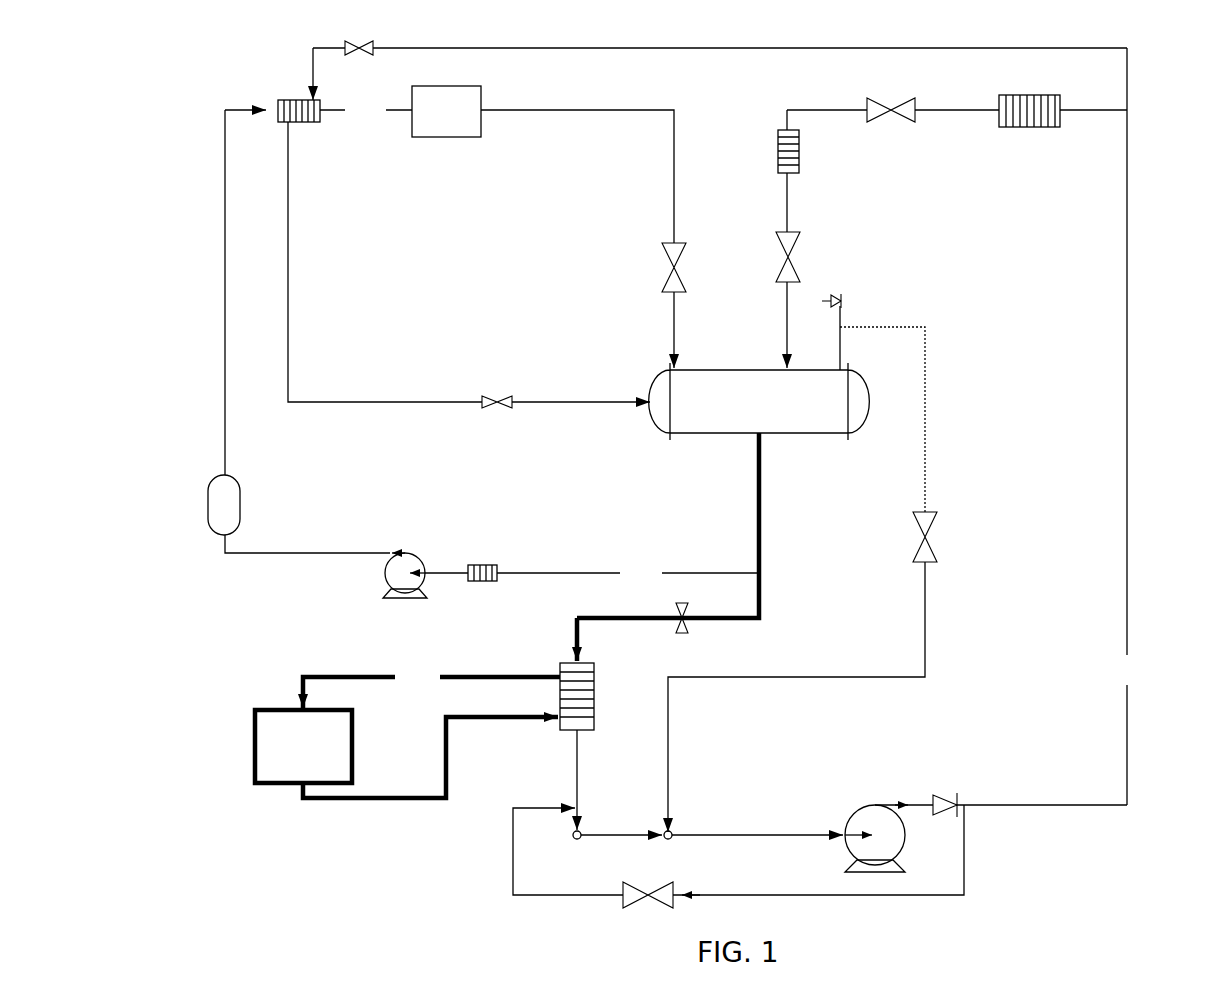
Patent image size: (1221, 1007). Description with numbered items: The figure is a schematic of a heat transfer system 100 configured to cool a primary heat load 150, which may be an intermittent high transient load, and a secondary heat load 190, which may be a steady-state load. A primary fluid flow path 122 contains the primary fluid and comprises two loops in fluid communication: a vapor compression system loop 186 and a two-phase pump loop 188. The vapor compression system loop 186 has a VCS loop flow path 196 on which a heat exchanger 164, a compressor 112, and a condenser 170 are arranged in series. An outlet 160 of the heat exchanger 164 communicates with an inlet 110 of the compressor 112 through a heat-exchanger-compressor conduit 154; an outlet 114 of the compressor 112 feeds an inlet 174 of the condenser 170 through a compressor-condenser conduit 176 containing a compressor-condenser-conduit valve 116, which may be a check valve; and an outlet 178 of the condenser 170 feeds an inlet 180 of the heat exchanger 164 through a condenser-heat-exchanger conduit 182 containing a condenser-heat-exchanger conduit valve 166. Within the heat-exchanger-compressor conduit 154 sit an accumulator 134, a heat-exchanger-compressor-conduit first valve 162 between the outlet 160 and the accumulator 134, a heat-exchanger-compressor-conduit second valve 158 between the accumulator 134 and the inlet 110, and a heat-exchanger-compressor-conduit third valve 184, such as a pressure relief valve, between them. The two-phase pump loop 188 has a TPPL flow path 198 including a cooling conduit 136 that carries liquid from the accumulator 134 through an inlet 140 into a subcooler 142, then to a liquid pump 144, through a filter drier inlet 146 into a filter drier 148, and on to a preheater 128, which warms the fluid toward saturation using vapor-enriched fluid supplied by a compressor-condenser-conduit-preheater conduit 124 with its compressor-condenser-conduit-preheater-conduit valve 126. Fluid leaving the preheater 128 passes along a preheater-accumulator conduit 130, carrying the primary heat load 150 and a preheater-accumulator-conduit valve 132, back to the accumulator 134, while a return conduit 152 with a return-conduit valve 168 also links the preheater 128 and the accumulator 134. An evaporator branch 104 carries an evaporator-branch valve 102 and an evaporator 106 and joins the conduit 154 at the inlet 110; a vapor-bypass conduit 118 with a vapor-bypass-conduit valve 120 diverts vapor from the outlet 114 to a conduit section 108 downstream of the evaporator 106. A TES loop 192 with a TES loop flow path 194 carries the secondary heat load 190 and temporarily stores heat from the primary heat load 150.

The heat transfer system 100 is at (1140, 780).
The evaporator-branch valve 102 is at (690, 628).
The evaporator branch 104 is at (762, 602).
The evaporator 106 is at (594, 690).
The conduit section 108 is at (621, 830).
The inlet 110 is at (732, 832).
The compressor 112 is at (868, 805).
The outlet 114 is at (918, 803).
The compressor-condenser-conduit valve 116 is at (945, 800).
The vapor-bypass conduit 118 is at (968, 868).
The vapor-bypass-conduit valve 120 is at (680, 893).
The primary fluid flow path 122 is at (366, 111).
The compressor-condenser-conduit-preheater conduit 124 is at (729, 50).
The compressor-condenser-conduit-preheater-conduit valve 126 is at (375, 52).
The preheater 128 is at (278, 102).
The preheater-accumulator conduit 130 is at (583, 118).
The preheater-accumulator-conduit valve 132 is at (668, 257).
The accumulator 134 is at (652, 383).
The cooling conduit 136 is at (757, 470).
The inlet 140 is at (538, 572).
The subcooler 142 is at (477, 565).
The liquid pump 144 is at (405, 553).
The filter drier inlet 146 is at (296, 552).
The filter drier 148 is at (213, 478).
The primary heat load 150 is at (446, 111).
The return conduit 152 is at (378, 396).
The heat-exchanger-compressor conduit 154 is at (931, 368).
The heat-exchanger-compressor-conduit second valve 158 is at (935, 523).
The outlet 160 is at (785, 200).
The heat-exchanger-compressor-conduit first valve 162 is at (790, 245).
The heat exchanger 164 is at (799, 152).
The condenser-heat-exchanger conduit valve 166 is at (880, 118).
The return-conduit valve 168 is at (497, 395).
The condenser 170 is at (1028, 127).
The inlet 174 is at (1070, 112).
The compressor-condenser conduit 176 is at (1124, 421).
The outlet 178 is at (995, 108).
The inlet 180 is at (835, 108).
The condenser-heat-exchanger conduit 182 is at (935, 108).
The heat-exchanger-compressor-conduit third valve 184 is at (845, 300).
The vapor compression system loop 186 is at (1130, 277).
The two-phase pump loop 188 is at (212, 189).
The secondary heat load 190 is at (303, 746).
The TES loop 192 is at (358, 805).
The TES loop flow path 194 is at (431, 687).
The VCS loop flow path 196 is at (1129, 673).
The TPPL flow path 198 is at (691, 574).